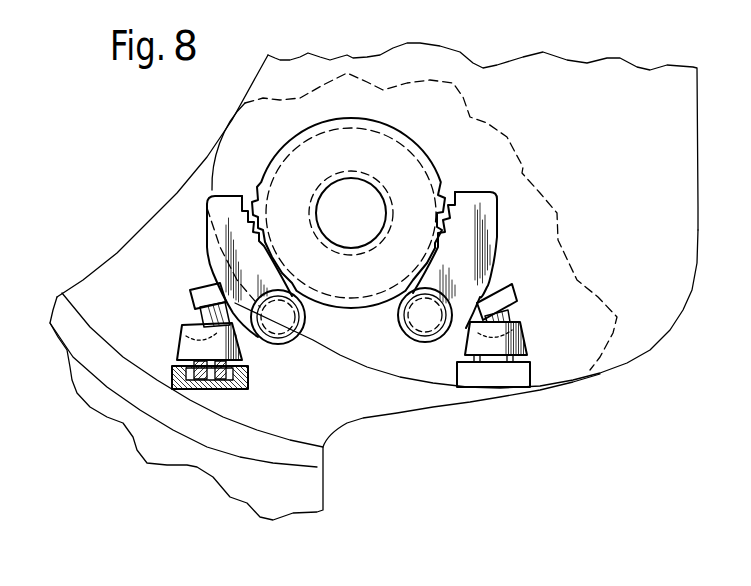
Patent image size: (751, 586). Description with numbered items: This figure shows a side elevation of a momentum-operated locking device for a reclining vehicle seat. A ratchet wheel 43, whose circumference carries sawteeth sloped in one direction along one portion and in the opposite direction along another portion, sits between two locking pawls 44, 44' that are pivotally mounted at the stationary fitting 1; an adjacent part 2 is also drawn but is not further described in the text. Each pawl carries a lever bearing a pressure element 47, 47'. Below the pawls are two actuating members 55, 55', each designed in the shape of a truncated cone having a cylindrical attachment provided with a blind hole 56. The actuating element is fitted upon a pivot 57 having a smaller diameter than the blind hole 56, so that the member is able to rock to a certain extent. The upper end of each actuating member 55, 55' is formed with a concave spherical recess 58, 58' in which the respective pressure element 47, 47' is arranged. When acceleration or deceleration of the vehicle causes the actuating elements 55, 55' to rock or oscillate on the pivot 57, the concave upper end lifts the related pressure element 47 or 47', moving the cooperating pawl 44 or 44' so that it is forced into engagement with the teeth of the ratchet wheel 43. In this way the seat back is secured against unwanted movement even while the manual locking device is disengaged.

The stationary fitting 1 is at (313, 492).
The plate 2 is at (682, 138).
The ratchet wheel 43 is at (398, 163).
The locking pawl 44 is at (454, 243).
The locking pawl 44' is at (237, 269).
The pressure element 47 is at (519, 298).
The pressure element 47' is at (185, 295).
The actuating member 55 is at (518, 354).
The actuating member 55' is at (182, 342).
The blind hole 56 is at (197, 385).
The pivot 57 is at (208, 383).
The spherical recess 58 is at (538, 317).
The spherical recess 58' is at (170, 318).